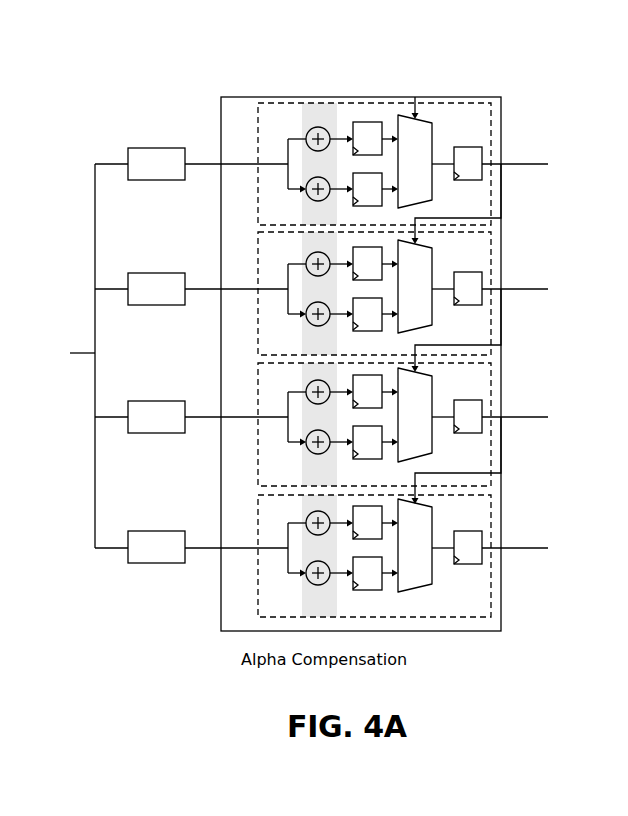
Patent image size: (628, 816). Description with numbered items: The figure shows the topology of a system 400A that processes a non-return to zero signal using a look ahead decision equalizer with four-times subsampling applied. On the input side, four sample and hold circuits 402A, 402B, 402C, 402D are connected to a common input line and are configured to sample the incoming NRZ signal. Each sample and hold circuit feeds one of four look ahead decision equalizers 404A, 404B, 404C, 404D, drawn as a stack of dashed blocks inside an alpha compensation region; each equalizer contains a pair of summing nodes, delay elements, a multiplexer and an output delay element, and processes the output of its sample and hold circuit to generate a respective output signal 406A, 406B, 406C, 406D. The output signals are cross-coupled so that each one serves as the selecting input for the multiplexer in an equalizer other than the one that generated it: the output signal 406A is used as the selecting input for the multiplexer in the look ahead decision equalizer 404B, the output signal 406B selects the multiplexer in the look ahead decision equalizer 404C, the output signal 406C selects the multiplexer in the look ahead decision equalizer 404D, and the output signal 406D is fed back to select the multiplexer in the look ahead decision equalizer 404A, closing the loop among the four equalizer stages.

The system 400A is at (114, 76).
The sample and hold circuit 402A is at (153, 147).
The sample and hold circuit 402B is at (158, 272).
The sample and hold circuit 402C is at (158, 400).
The sample and hold circuit 402D is at (158, 530).
The look ahead decision equalizer 404A is at (493, 128).
The look ahead decision equalizer 404B is at (495, 255).
The look ahead decision equalizer 404C is at (493, 383).
The look ahead decision equalizer 404D is at (494, 515).
The output signal 406A is at (528, 162).
The output signal 406B is at (530, 284).
The output signal 406C is at (528, 412).
The output signal 406D is at (529, 540).